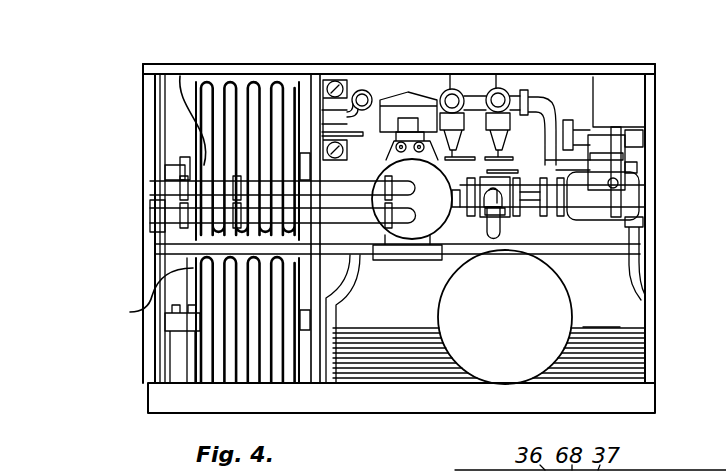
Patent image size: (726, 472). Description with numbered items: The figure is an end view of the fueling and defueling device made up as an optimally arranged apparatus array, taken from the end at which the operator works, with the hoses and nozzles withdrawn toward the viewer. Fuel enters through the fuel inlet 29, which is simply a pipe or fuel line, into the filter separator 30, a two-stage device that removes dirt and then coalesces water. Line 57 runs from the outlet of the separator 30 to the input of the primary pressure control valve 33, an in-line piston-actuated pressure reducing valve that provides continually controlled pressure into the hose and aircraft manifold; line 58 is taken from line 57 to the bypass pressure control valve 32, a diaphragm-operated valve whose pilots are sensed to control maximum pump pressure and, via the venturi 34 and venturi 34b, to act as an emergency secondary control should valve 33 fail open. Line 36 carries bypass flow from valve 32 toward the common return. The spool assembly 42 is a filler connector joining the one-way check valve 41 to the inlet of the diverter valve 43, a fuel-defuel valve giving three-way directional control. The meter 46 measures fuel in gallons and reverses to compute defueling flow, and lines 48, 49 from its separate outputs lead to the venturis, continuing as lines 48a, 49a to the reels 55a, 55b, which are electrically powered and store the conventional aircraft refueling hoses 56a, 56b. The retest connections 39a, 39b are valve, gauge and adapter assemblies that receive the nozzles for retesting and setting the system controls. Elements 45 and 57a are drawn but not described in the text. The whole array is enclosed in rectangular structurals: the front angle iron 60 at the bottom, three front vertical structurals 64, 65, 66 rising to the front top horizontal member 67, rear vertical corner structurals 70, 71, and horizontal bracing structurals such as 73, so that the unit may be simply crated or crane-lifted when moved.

The fuel inlet 29 is at (376, 93).
The filter separator 30 is at (622, 326).
The bypass pressure control valve 32 is at (590, 140).
The primary pressure control valve 33 is at (596, 207).
The venturi 34 is at (213, 180).
The venturi 34b is at (200, 212).
The line 36 is at (555, 107).
The retest connection 39a is at (505, 97).
The retest connection 39b is at (475, 97).
The one-way check valve 41 is at (552, 212).
The spool assembly 42 is at (528, 185).
The diverter valve 43 is at (505, 217).
The valve 45 is at (488, 231).
The meter 46 is at (430, 181).
The line 48 is at (362, 177).
The line 48a is at (172, 187).
The line 49 is at (372, 256).
The line 49a is at (167, 223).
The reel 55a is at (180, 66).
The reel 55b is at (190, 278).
The hose 56a is at (258, 93).
The hose 56b is at (292, 344).
The line 57 is at (635, 231).
The valve stem 57a is at (636, 193).
The line 58 is at (636, 137).
The front angle iron 60 is at (160, 410).
The front vertical structural 64 is at (152, 298).
The front vertical structural 65 is at (330, 308).
The front vertical structural 66 is at (648, 358).
The front top horizontal member 67 is at (230, 64).
The rear vertical corner structural 70 is at (652, 278).
The rear vertical corner structural 71 is at (152, 352).
The horizontal structural 73 is at (273, 247).